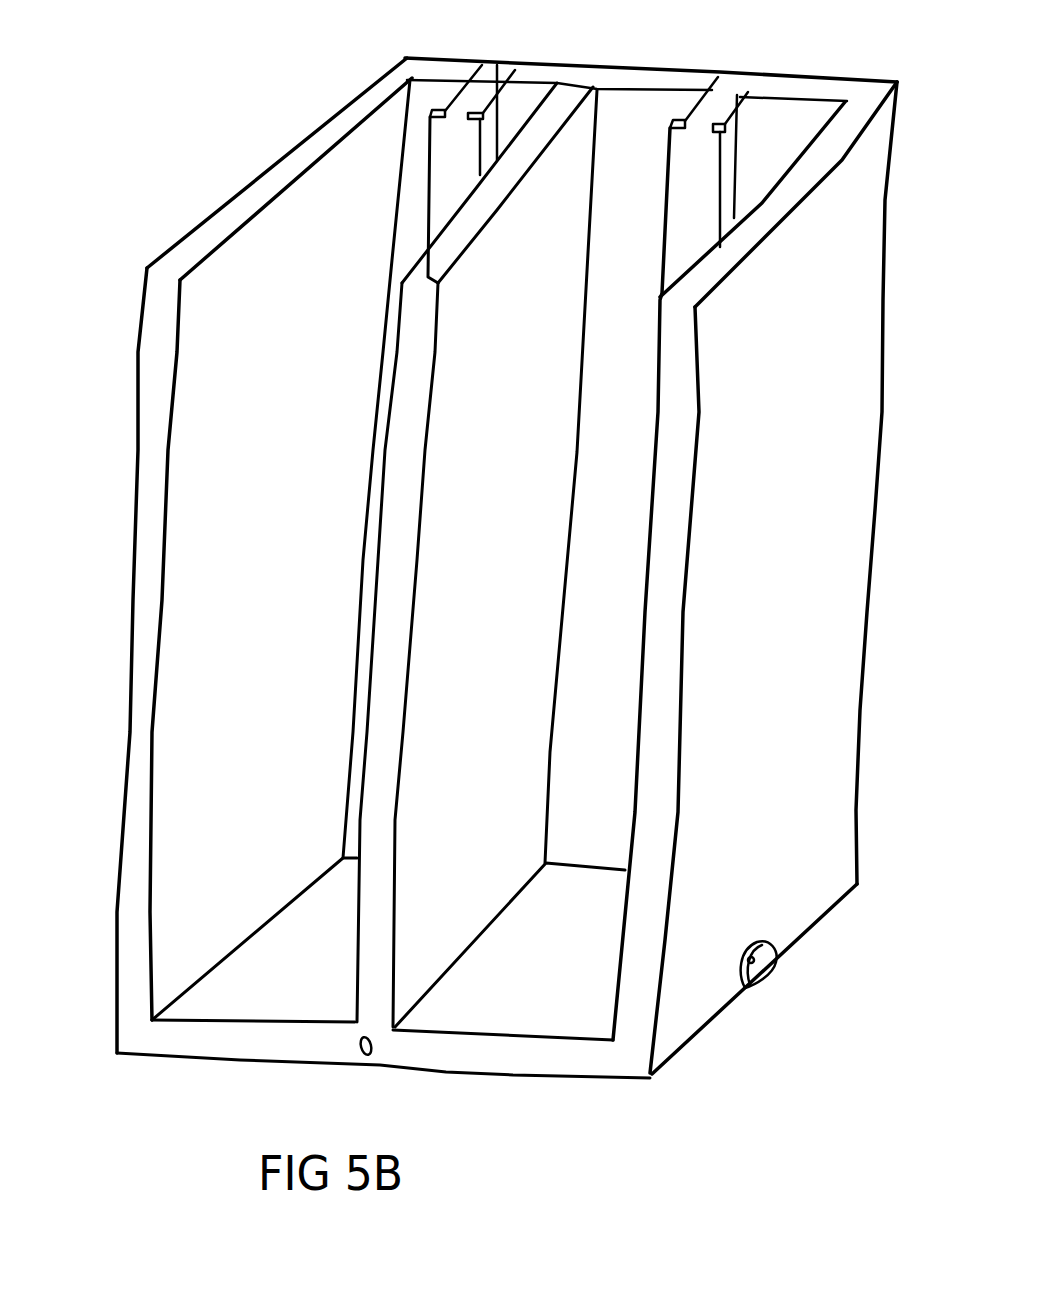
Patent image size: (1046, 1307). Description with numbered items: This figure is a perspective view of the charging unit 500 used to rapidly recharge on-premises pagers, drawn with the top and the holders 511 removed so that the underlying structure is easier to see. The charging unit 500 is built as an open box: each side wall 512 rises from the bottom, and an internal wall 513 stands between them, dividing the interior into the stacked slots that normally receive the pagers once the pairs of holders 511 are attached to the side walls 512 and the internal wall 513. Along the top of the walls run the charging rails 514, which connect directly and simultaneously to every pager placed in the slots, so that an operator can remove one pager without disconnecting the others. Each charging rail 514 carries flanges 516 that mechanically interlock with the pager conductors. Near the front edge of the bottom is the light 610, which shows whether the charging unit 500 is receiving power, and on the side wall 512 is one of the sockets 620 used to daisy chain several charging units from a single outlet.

The charging unit 500 is at (475, 580).
The holders 511 is at (742, 92).
The side wall 512 is at (130, 600).
The internal wall 513 is at (378, 983).
The charging rail 514 is at (498, 66).
The flanges 516 is at (441, 110).
The light 610 is at (360, 1053).
The sockets 620 is at (755, 990).